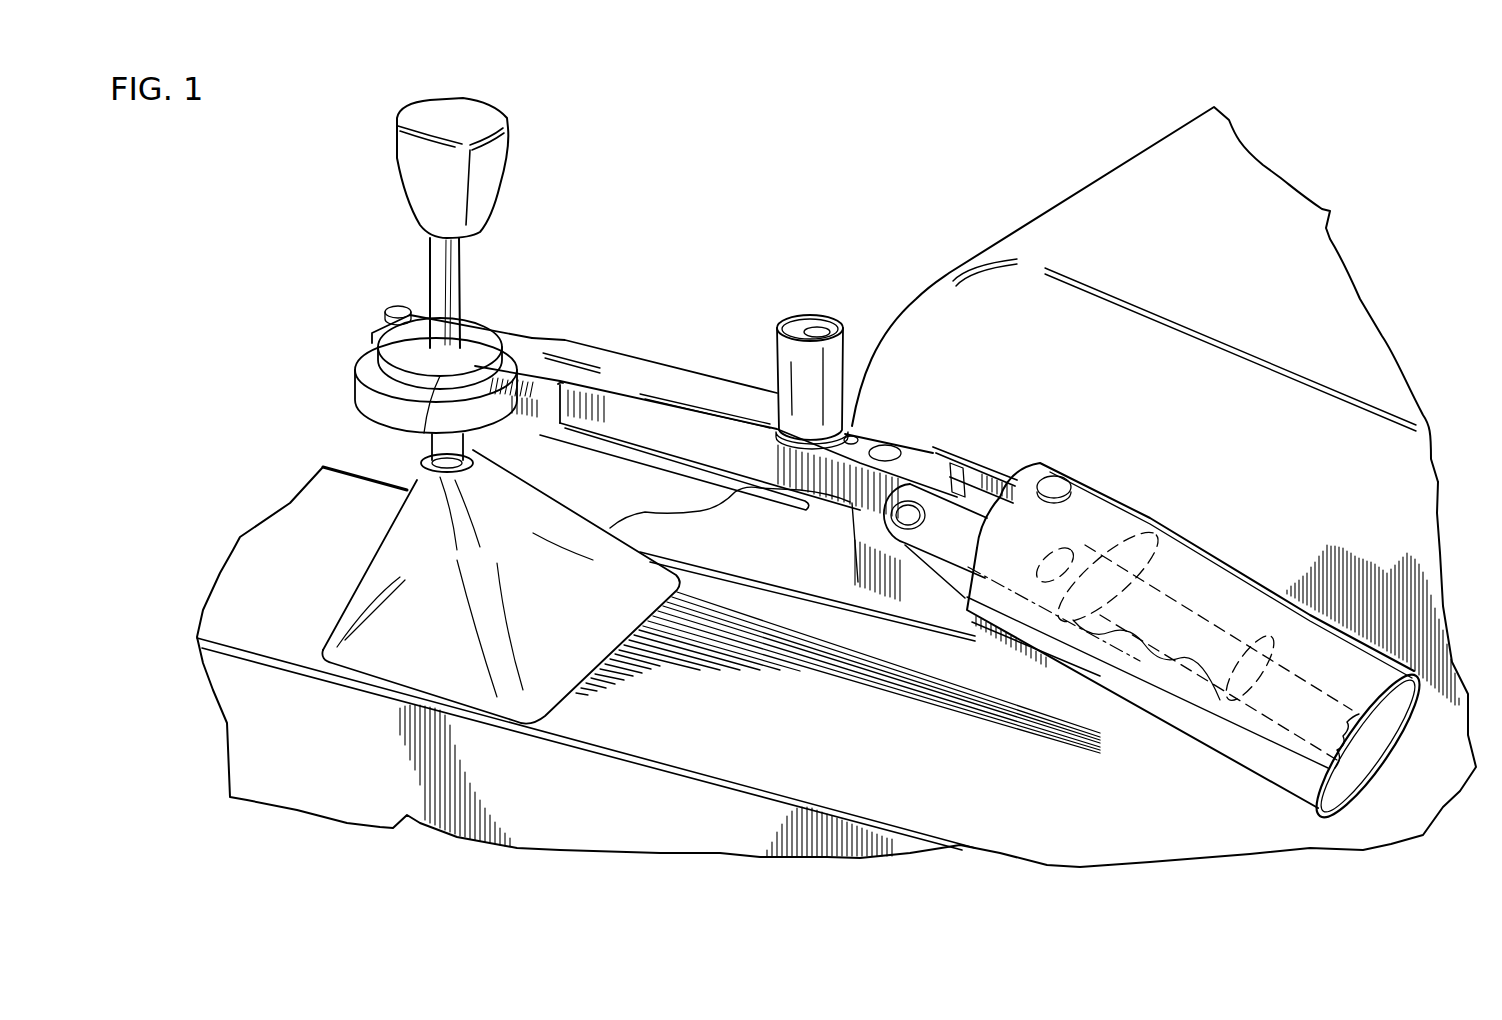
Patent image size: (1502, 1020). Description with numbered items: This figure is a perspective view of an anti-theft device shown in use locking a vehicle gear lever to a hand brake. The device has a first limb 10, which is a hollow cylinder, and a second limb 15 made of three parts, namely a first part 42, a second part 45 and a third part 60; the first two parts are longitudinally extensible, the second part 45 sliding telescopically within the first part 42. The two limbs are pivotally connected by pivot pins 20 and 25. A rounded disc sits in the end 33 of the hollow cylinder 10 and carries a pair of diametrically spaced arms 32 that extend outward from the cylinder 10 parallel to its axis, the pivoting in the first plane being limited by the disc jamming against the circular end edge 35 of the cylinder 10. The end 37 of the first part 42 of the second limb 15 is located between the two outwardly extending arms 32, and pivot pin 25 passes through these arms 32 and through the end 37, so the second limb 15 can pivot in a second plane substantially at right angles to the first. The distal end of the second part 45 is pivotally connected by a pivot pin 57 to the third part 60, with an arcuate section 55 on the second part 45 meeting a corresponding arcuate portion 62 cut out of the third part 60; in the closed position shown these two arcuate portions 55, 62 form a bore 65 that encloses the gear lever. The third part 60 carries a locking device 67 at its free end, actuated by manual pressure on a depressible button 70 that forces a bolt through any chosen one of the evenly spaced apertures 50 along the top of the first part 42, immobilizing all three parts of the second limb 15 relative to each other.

The first limb 10 is at (1116, 698).
The second limb 15 is at (680, 370).
The pivot pin 20 is at (1058, 484).
The pivot pin 25 is at (893, 522).
The arms 32 is at (979, 478).
The end of the hollow cylinder 33 is at (1025, 635).
The circular end edge 35 is at (972, 612).
The end of the first part 37 is at (962, 490).
The first part 42 is at (840, 503).
The second part 45 is at (542, 430).
The apertures 50 is at (887, 445).
The arcuate section 55 is at (363, 378).
The pivot pin 57 is at (392, 303).
The third part 60 is at (580, 350).
The arcuate portion 62 is at (467, 347).
The bore 65 is at (430, 437).
The locking device 67 is at (849, 436).
The depressible button 70 is at (792, 316).